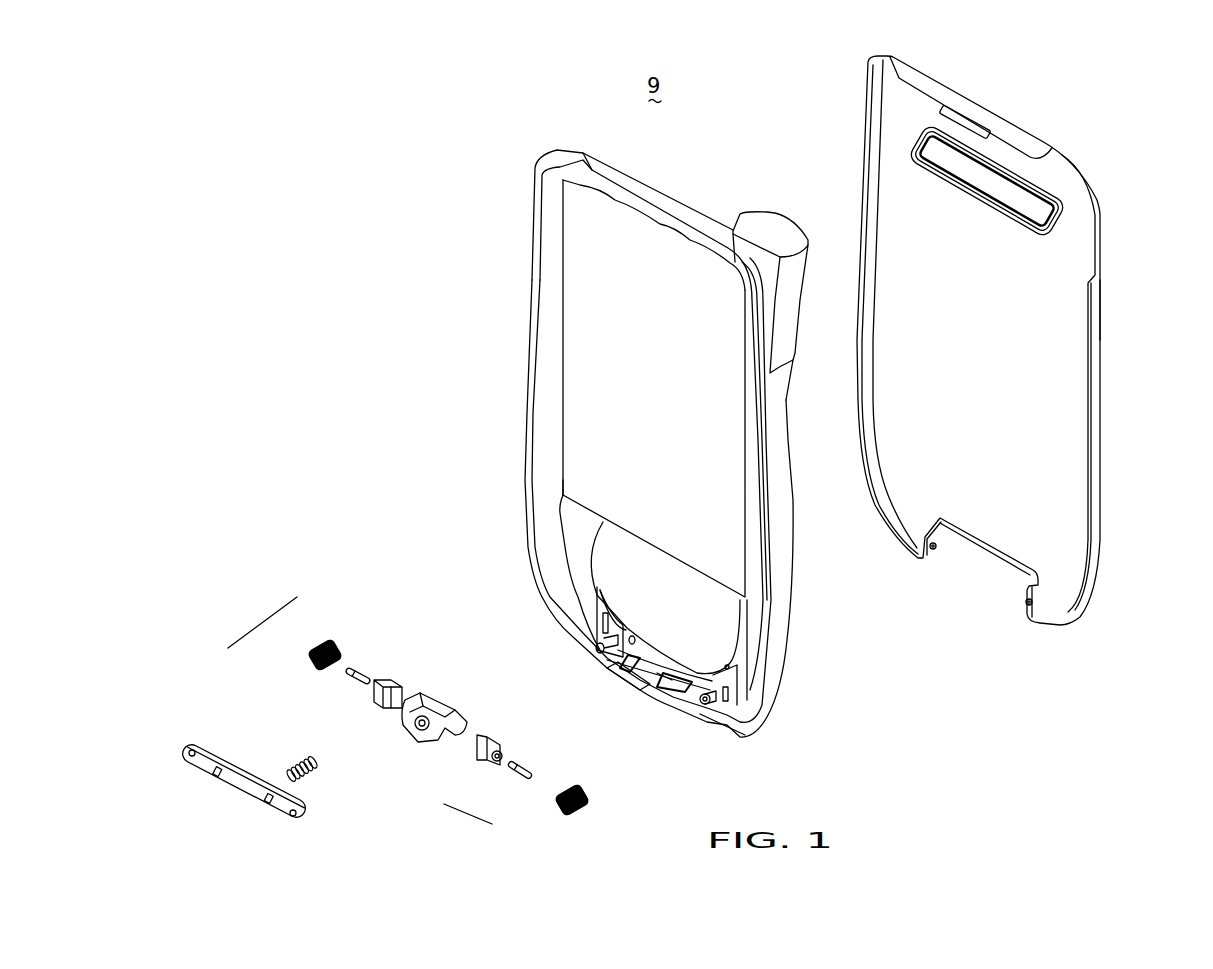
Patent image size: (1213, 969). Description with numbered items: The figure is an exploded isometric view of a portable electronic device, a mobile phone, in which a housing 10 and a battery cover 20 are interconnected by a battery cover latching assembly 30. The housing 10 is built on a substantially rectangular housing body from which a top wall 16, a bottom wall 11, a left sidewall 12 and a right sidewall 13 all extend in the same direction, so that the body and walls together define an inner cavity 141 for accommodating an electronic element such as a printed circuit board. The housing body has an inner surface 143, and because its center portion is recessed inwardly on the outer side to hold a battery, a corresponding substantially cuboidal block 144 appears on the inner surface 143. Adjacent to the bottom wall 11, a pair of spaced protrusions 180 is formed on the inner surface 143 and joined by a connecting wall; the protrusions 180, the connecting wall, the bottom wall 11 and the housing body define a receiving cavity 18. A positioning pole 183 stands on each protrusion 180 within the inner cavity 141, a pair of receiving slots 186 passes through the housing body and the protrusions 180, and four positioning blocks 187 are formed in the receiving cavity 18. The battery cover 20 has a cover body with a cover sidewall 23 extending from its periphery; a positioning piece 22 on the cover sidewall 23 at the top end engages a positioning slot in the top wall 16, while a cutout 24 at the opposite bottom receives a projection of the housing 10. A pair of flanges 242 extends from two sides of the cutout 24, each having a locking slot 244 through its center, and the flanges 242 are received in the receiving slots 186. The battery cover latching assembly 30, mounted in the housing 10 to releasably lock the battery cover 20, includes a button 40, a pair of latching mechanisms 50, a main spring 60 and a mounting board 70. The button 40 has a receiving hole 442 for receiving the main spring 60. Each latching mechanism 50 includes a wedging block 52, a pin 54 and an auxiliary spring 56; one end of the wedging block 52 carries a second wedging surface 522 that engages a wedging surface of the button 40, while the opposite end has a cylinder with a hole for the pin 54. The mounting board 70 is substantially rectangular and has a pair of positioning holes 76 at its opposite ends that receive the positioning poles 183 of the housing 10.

The housing 10 is at (526, 149).
The bottom wall 11 is at (742, 726).
The left sidewall 12 is at (548, 268).
The right sidewall 13 is at (774, 460).
The top wall 16 is at (652, 193).
The receiving cavity 18 is at (673, 692).
The battery cover 20 is at (987, 93).
The positioning piece 22 is at (953, 118).
The cover sidewall 23 is at (1093, 305).
The cutout 24 is at (985, 585).
The battery cover latching assembly 30 is at (297, 597).
The button 40 is at (455, 697).
The latching mechanism 50 is at (552, 838).
The wedging block 52 is at (376, 692).
The pin 54 is at (362, 672).
The auxiliary spring 56 is at (311, 648).
The main spring 60 is at (293, 760).
The mounting board 70 is at (245, 790).
The positioning hole 76 is at (188, 756).
The inner cavity 141 is at (563, 556).
The inner surface 143 is at (573, 518).
The cuboidal block 144 is at (728, 497).
The protrusion 180 is at (742, 680).
The positioning pole 183 is at (712, 730).
The receiving slot 186 is at (731, 702).
The positioning block 187 is at (624, 679).
The flange 242 is at (1033, 590).
The locking slot 244 is at (1032, 603).
The receiving hole 442 is at (418, 740).
The second wedging surface 522 is at (395, 706).